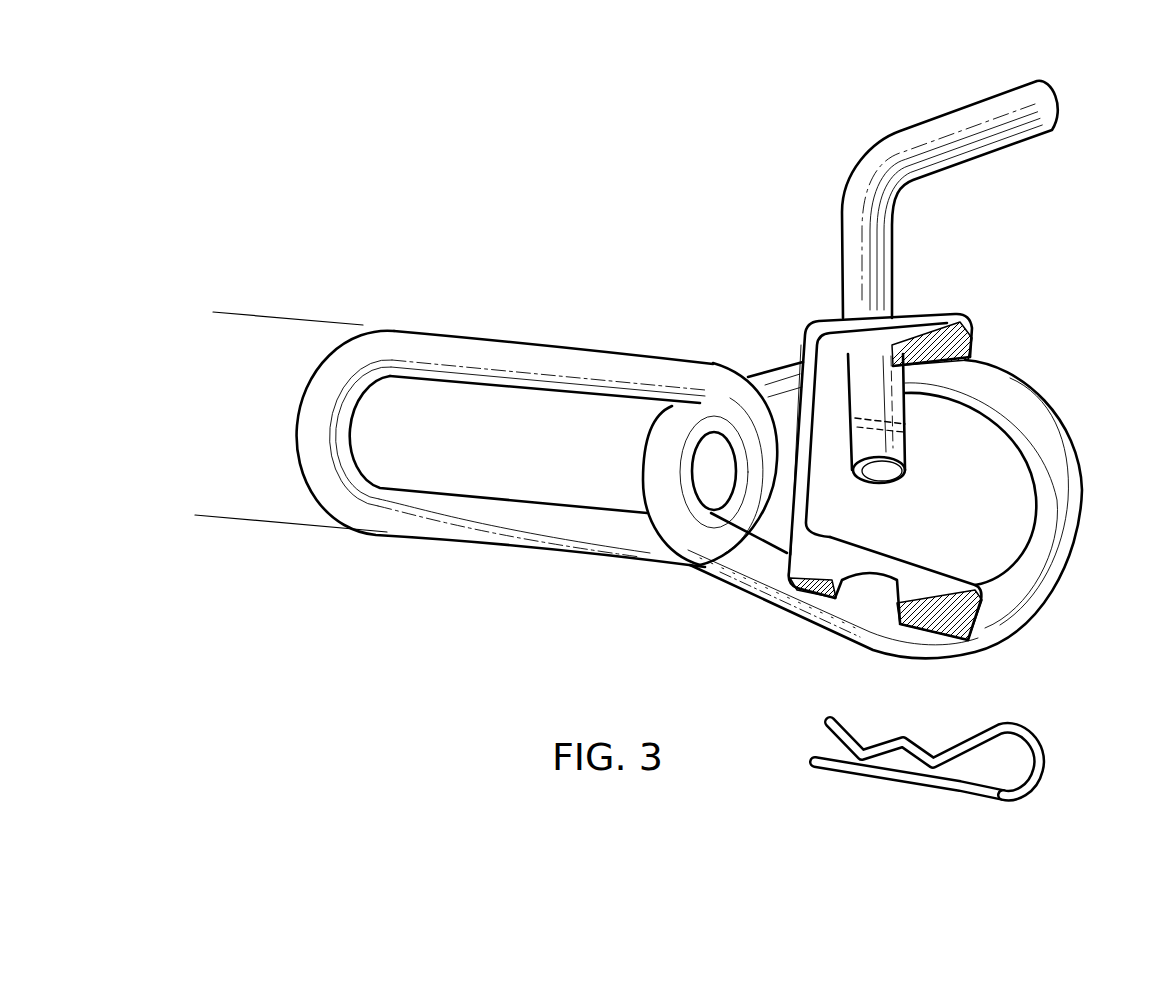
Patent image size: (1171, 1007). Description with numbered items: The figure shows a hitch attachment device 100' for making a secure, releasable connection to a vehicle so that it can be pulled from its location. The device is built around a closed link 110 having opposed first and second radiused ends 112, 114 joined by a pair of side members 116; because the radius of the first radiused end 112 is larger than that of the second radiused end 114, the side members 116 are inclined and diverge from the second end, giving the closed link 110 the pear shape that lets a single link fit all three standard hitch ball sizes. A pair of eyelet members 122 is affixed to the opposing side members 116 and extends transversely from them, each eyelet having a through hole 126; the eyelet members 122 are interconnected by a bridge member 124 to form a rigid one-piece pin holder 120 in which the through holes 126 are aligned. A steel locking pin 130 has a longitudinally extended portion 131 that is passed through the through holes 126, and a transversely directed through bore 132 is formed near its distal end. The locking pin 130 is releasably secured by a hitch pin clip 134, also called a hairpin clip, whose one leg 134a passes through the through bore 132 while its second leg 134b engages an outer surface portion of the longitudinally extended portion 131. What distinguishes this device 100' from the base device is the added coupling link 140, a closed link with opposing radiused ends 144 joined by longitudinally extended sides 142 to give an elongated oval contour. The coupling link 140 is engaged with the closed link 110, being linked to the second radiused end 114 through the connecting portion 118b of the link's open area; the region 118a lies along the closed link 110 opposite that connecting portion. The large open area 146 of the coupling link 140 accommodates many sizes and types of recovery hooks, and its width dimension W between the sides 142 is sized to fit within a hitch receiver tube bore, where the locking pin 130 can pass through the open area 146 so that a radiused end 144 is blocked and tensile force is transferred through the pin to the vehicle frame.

The hitch attachment device 100' is at (910, 426).
The closed link 110 is at (902, 383).
The first radiused end 112 is at (910, 509).
The second radiused end 114 is at (642, 455).
The side members 116 is at (902, 475).
The first portion of ring 118a is at (997, 487).
The connecting portion 118b is at (773, 535).
The pin holder 120 is at (874, 354).
The eyelet members 122 is at (935, 313).
The bridge member 124 is at (820, 483).
The through hole 126 is at (957, 337).
The locking pin 130 is at (950, 179).
The longitudinally extended portion 131 is at (878, 255).
The through bore 132 is at (913, 427).
The hitch pin clip 134 is at (916, 744).
The leg 134a is at (863, 773).
The second leg 134b is at (917, 737).
The coupling link 140 is at (519, 407).
The longitudinally extended sides 142 is at (517, 340).
The radiused ends 144 is at (328, 387).
The open area 146 is at (380, 442).
The width dimension W is at (226, 316).